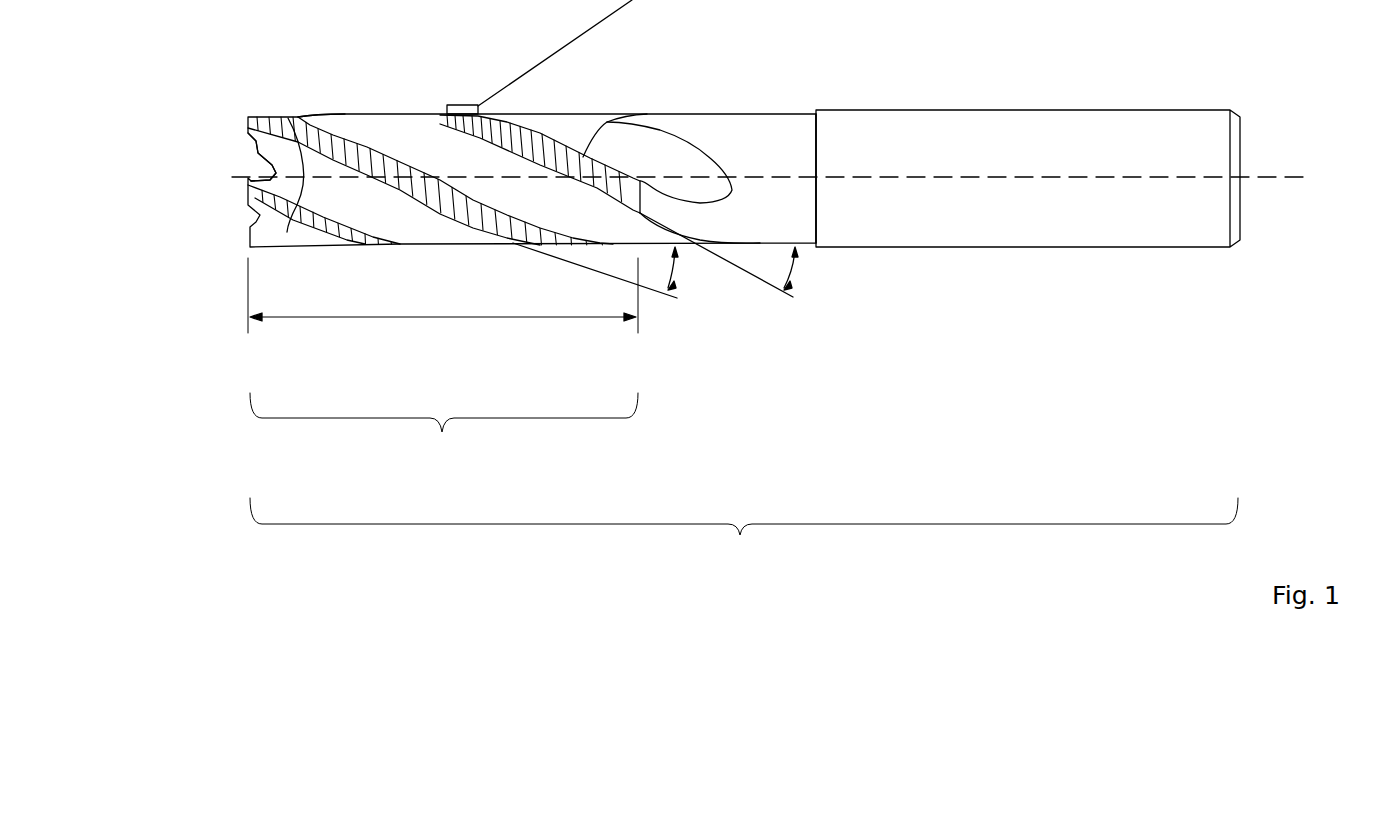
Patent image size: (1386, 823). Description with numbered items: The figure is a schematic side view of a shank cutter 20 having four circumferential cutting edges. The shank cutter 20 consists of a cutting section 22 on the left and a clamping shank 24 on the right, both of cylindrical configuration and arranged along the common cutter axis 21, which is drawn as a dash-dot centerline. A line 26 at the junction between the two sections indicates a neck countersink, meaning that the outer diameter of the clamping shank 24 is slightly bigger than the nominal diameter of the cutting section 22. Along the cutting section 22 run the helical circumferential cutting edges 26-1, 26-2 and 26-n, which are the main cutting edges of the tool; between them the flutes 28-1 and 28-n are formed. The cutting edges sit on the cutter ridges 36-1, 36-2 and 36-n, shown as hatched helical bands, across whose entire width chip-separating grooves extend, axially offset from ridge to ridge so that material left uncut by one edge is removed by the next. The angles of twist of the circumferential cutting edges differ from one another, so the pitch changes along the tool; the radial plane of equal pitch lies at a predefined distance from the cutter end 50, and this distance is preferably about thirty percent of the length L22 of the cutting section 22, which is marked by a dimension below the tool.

The shank cutter 20 is at (740, 535).
The cutting section 22 is at (442, 432).
The clamping shank 24 is at (1022, 110).
The line indicating neck countersink 26 is at (816, 147).
The cutter axis 21 is at (1293, 177).
The length of the cutting section L22 is at (432, 322).
The flute 28-1 is at (390, 217).
The flute 28-n is at (390, 115).
The circumferential cutting edge 26-1 is at (340, 115).
The circumferential cutting edge 26-2 is at (288, 118).
The circumferential cutting edge 26-n is at (562, 148).
The cutter ridge 36-1 is at (266, 125).
The cutter ridge 36-2 is at (275, 220).
The cutter ridge 36-n is at (627, 114).
The cutter end 50 is at (247, 172).